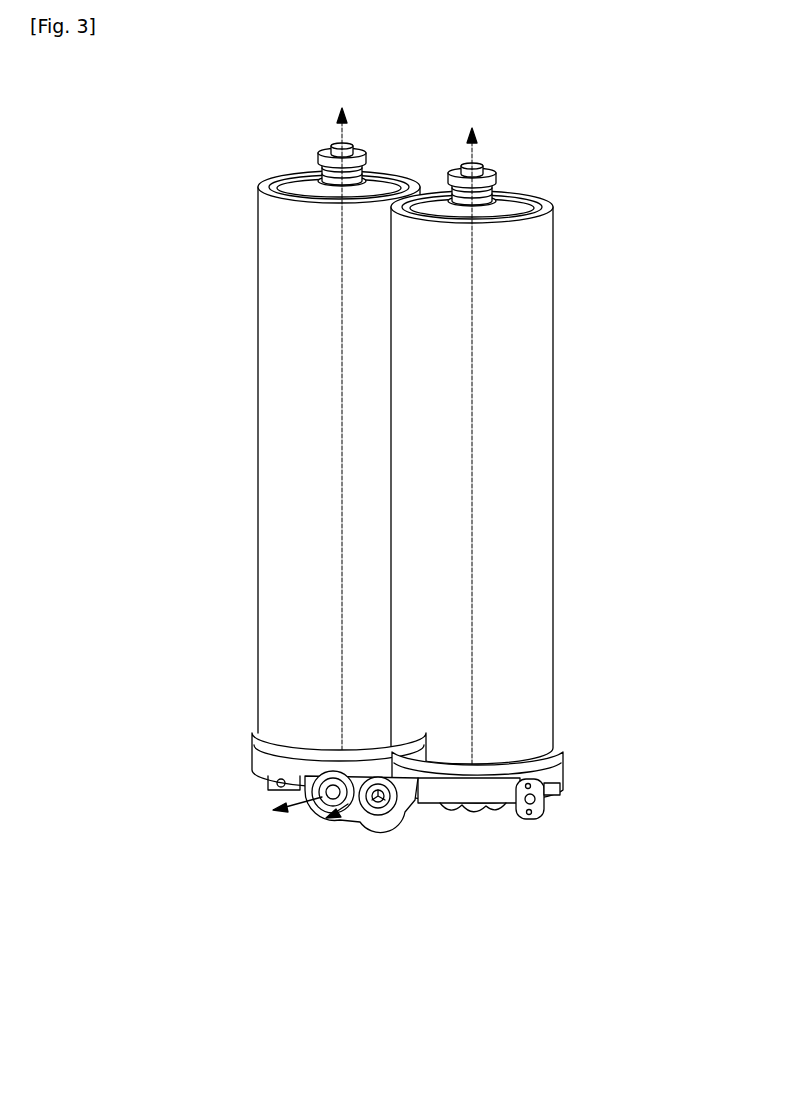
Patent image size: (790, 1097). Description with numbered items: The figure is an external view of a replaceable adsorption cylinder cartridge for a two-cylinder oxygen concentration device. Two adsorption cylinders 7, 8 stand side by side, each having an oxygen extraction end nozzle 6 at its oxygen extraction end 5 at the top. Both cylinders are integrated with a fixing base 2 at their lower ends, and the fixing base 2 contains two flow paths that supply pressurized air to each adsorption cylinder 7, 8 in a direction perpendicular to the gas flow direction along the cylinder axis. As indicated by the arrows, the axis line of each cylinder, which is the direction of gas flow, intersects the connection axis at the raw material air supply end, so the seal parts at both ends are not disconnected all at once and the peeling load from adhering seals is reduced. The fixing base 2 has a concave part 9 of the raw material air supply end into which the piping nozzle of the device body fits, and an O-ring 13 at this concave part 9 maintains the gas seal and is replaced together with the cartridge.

The fixing base 2 is at (352, 822).
The oxygen extraction end 5 is at (503, 198).
The oxygen extraction end nozzle 6 is at (493, 182).
The adsorption cylinder 7 is at (303, 478).
The adsorption cylinder 8 is at (550, 430).
The concave part of raw material air supply end 9 is at (310, 786).
The O-ring 13 is at (383, 822).